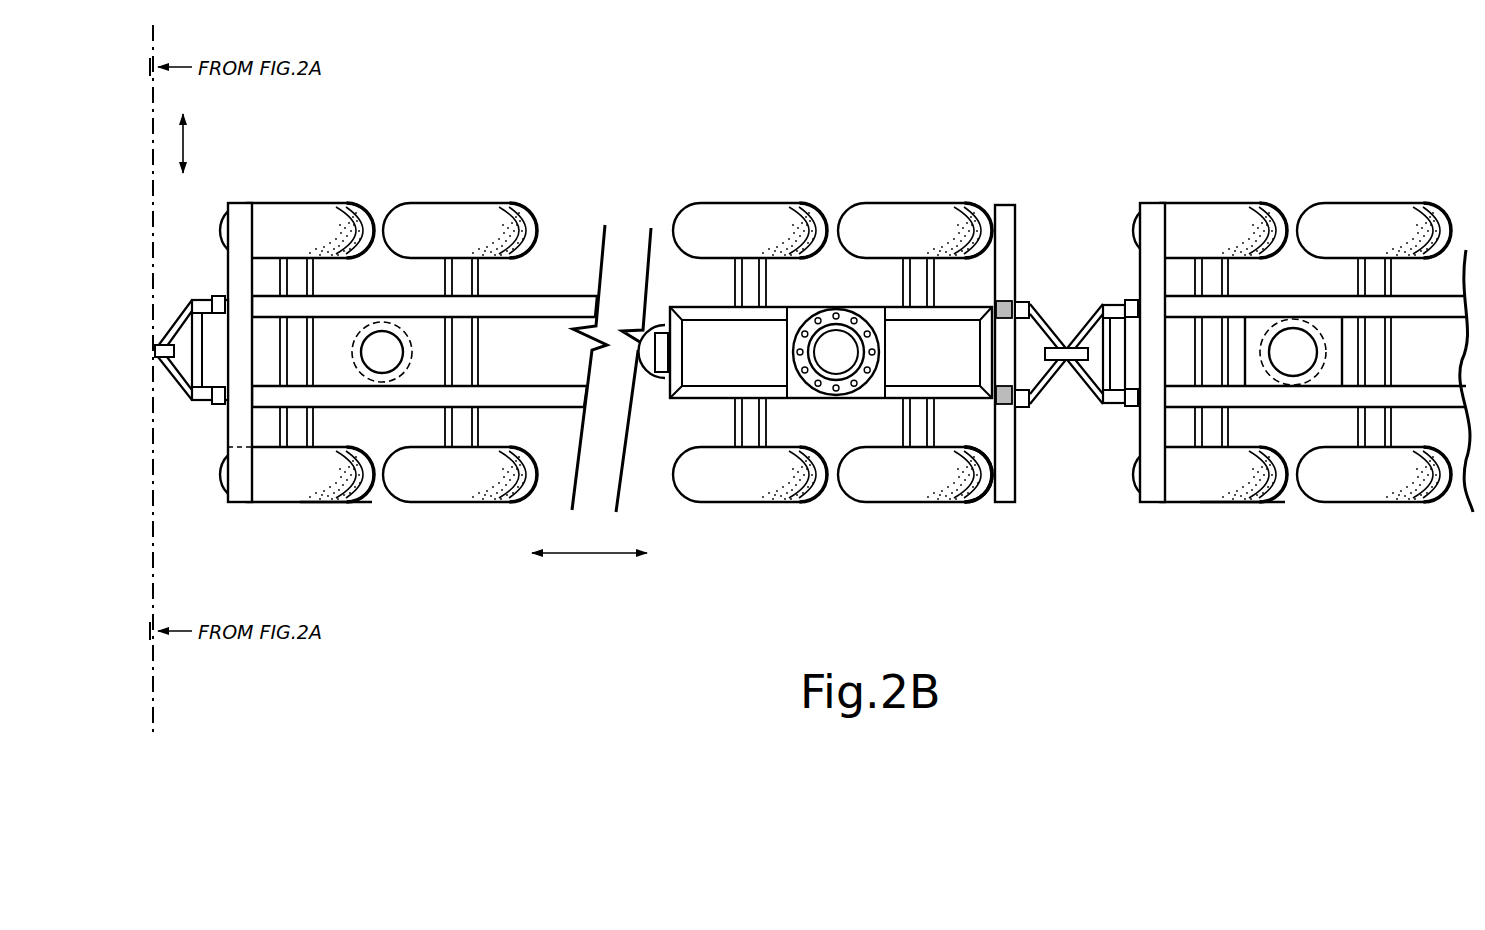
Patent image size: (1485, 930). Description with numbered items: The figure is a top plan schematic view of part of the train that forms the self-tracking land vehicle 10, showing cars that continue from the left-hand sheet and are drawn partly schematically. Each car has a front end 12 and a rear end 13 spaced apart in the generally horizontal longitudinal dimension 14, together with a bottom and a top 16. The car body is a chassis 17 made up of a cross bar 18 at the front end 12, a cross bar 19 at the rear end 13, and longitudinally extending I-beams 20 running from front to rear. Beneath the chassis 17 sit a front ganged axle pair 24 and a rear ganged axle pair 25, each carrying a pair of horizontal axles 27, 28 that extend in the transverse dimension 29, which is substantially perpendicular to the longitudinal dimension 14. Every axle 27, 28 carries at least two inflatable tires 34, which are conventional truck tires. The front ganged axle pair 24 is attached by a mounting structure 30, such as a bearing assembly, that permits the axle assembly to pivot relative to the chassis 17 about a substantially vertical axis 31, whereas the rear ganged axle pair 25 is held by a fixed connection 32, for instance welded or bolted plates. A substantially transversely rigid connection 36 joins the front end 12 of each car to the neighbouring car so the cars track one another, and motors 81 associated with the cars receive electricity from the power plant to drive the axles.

The self-tracking land vehicle 10 is at (925, 515).
The front end 12 is at (213, 420).
The rear end 13 is at (1018, 448).
The longitudinal dimension 14 is at (593, 555).
The top 16 is at (530, 410).
The chassis 17 is at (268, 289).
The cross bar 18 is at (241, 430).
The cross bar 19 is at (1010, 260).
The I-beams 20 is at (859, 363).
The front ganged axle pair 24 is at (378, 504).
The rear ganged axle pair 25 is at (984, 503).
The horizontal axle 27 is at (312, 423).
The horizontal axle 28 is at (445, 419).
The transverse dimension 29 is at (183, 158).
The mounting structure 30 is at (349, 331).
The vertical axis 31 is at (381, 345).
The fixed connection 32 is at (826, 305).
The inflatable tires 34 is at (1338, 501).
The transversely rigid connection 36 is at (167, 390).
The motors 81 is at (657, 322).